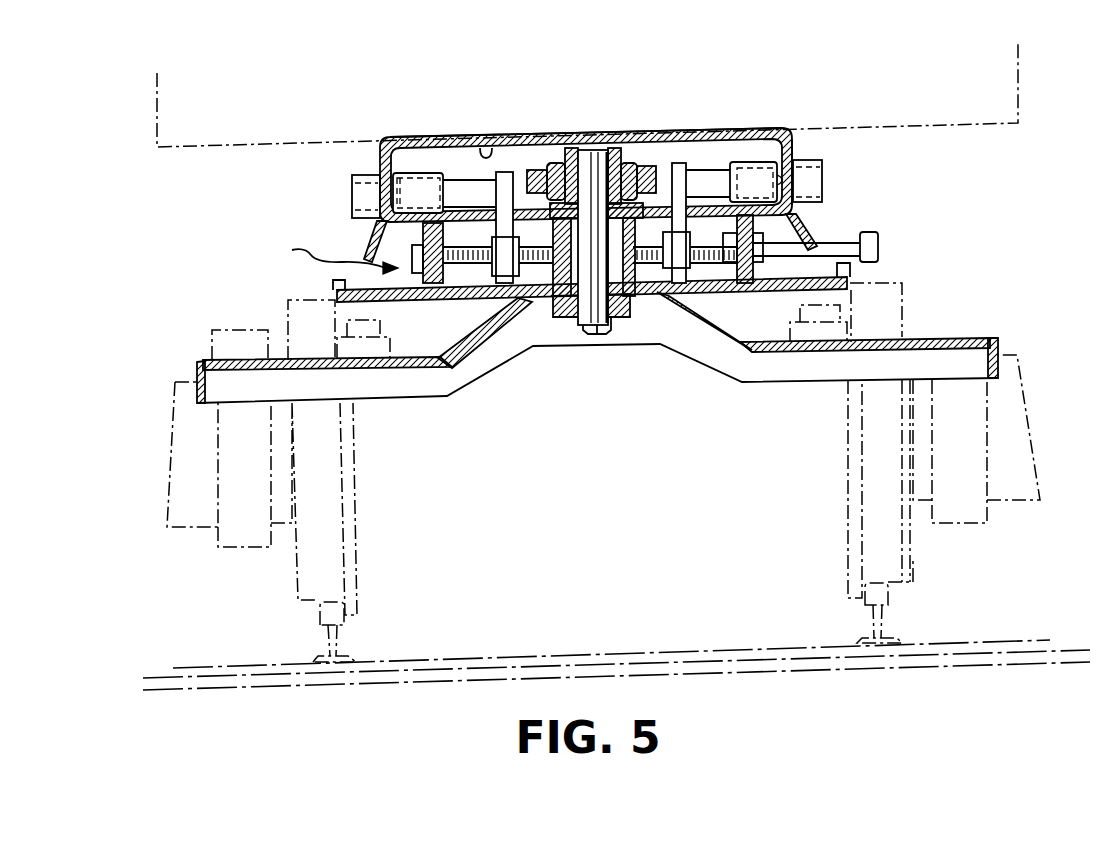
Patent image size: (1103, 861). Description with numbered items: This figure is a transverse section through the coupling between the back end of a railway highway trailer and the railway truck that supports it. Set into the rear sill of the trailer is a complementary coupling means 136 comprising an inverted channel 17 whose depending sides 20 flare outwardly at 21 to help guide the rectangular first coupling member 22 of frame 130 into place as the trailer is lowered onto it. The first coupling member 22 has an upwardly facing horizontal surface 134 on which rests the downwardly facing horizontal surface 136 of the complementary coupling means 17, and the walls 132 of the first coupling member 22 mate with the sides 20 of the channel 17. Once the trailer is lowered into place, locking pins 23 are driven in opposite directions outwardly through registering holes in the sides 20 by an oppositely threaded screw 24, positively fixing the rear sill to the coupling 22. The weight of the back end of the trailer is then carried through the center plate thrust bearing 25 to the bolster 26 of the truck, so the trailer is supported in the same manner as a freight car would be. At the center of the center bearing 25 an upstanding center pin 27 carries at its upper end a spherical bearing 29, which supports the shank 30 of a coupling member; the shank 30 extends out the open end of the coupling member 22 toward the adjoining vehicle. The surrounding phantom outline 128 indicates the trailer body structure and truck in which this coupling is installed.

The inverted channel 17 is at (628, 154).
The depending sides 20 is at (796, 150).
The outward flare 21 is at (806, 222).
The first coupling member 22 is at (490, 148).
The locking pins 23 is at (455, 182).
The oppositely threaded screw 24 is at (850, 243).
The center plate thrust bearing 25 is at (562, 308).
The bolster 26 is at (486, 358).
The center pin 27 is at (613, 305).
The spherical bearing 29 is at (598, 140).
The shank 30 is at (648, 166).
The vehicle body outline 128 is at (1020, 58).
The frame 130 is at (321, 257).
The side walls 132 is at (786, 178).
The upwardly facing horizontal surface 134 is at (752, 136).
The complementary coupling means 136 is at (523, 137).